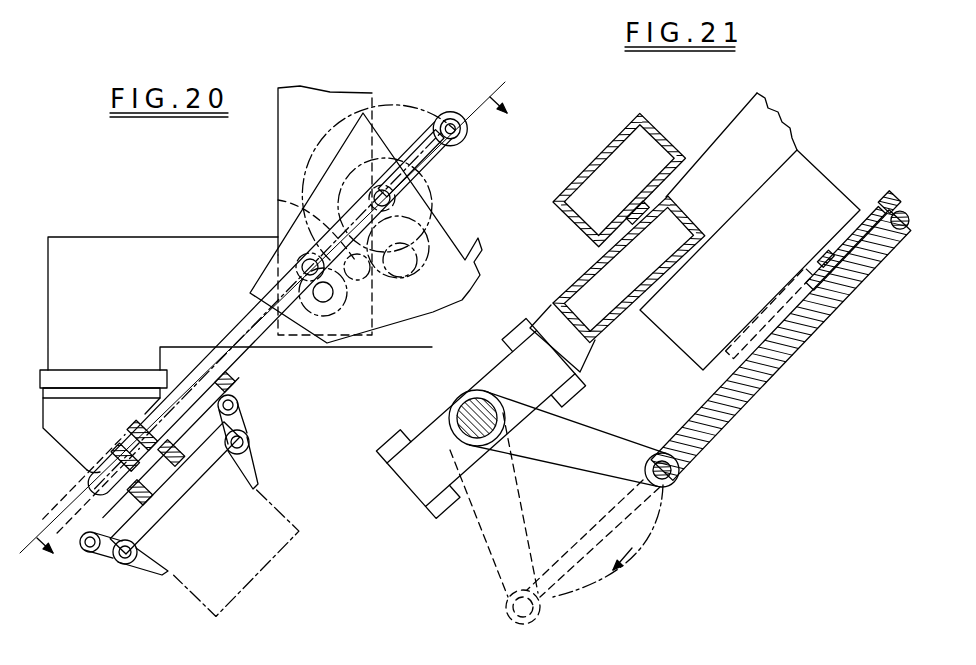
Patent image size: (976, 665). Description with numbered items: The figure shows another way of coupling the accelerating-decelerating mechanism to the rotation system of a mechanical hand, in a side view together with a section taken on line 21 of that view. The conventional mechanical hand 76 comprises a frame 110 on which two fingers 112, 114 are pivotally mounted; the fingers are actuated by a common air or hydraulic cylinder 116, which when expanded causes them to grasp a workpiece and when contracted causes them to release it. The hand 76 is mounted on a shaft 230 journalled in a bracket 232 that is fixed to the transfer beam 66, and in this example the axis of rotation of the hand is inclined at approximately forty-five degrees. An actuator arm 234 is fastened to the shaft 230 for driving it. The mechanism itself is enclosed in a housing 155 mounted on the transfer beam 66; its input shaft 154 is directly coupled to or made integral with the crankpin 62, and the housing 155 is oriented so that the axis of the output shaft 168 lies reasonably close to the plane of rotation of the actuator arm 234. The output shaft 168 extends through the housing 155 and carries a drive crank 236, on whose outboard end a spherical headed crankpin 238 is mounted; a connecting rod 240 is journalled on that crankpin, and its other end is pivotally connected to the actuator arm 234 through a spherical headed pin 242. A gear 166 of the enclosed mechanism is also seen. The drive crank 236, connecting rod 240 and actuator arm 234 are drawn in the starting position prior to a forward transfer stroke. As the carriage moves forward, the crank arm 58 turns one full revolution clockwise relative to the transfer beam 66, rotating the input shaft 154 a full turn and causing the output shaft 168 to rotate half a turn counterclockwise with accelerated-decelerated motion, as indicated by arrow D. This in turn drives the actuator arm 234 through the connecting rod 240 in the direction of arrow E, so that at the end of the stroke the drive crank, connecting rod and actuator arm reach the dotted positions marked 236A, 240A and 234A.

In FIG. 20, the crank arm 58 is at (278, 146).
In FIG. 21, the crank arm 58 is at (662, 137).
In FIG. 20, the crankpin 62 is at (336, 338).
In FIG. 21, the crankpin 62 is at (600, 245).
In FIG. 20, the transfer beam 66 is at (135, 240).
In FIG. 21, the transfer beam 66 is at (783, 105).
In FIG. 20, the mechanical hand 76 is at (133, 573).
In FIG. 21, the mechanical hand 76 is at (432, 523).
In FIG. 20, the frame 110 is at (252, 445).
In FIG. 20, the finger 112 is at (258, 479).
In FIG. 20, the finger 114 is at (150, 578).
In FIG. 20, the air or hydraulic cylinder 116 is at (236, 422).
In FIG. 20, the input shaft 154 is at (328, 301).
In FIG. 20, the housing 155 is at (415, 323).
In FIG. 21, the housing 155 is at (825, 175).
In FIG. 20, the gear 166 is at (420, 218).
In FIG. 20, the output shaft 168 is at (396, 199).
In FIG. 21, the output shaft 168 is at (805, 283).
In FIG. 20, the shaft 230 is at (90, 471).
In FIG. 21, the shaft 230 is at (458, 418).
In FIG. 20, the bracket 232 is at (112, 446).
In FIG. 20, the actuator arm 234 is at (225, 386).
In FIG. 21, the actuator arm 234 is at (628, 442).
In FIG. 21, the actuator arm end position 234A is at (500, 582).
In FIG. 20, the drive crank 236 is at (458, 166).
In FIG. 21, the drive crank 236 is at (847, 231).
In FIG. 20, the drive crank end position 236A is at (278, 200).
In FIG. 21, the drive crank end position 236A is at (750, 334).
In FIG. 20, the spherical headed crankpin 238 is at (466, 137).
In FIG. 21, the spherical headed crankpin 238 is at (878, 203).
In FIG. 20, the connecting rod 240 is at (236, 333).
In FIG. 21, the connecting rod 240 is at (766, 397).
In FIG. 20, the connecting rod end position 240A is at (53, 515).
In FIG. 21, the connecting rod end position 240A is at (593, 527).
In FIG. 21, the spherical headed pin 242 is at (682, 481).
In FIG. 20, the section line 21 is at (285, 335).
In FIG. 20, the arrow D is at (307, 123).
In FIG. 21, the arrow E is at (630, 555).